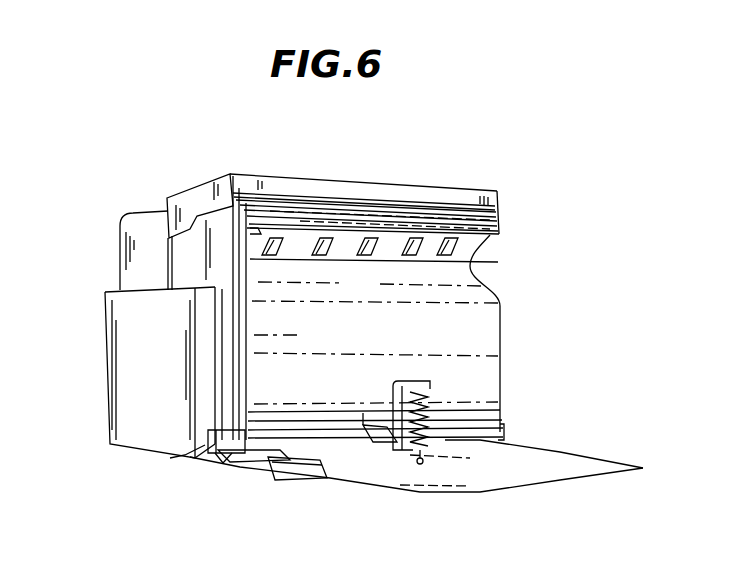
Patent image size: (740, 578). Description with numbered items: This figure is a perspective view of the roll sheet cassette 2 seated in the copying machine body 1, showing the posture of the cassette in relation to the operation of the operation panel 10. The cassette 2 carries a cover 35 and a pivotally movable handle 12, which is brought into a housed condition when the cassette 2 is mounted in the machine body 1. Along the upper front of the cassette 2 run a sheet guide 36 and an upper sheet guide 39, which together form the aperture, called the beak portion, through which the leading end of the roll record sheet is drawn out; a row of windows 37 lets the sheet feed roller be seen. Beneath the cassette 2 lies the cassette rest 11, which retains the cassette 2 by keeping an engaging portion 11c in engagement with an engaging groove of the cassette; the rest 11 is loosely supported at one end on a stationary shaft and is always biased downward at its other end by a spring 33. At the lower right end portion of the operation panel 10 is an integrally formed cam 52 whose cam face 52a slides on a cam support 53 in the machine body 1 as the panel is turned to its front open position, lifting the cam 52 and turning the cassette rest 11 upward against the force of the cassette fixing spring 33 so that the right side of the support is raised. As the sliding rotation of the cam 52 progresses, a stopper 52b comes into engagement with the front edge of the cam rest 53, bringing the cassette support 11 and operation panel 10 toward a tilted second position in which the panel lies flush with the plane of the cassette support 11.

The copying machine body 1 is at (355, 468).
The roll sheet cassette 2 is at (197, 268).
The operation panel 10 is at (148, 432).
The cassette rest 11 is at (364, 447).
The engaging portion 11c is at (482, 441).
The handle 12 is at (191, 197).
The spring 33 is at (424, 446).
The cover 35 is at (137, 257).
The sheet guide 36 is at (351, 223).
The window 37 is at (452, 249).
The upper sheet guide 39 is at (462, 222).
The cam 52 is at (216, 454).
The cam face 52a is at (224, 456).
The stopper 52b is at (213, 447).
The cam support 53 is at (276, 466).